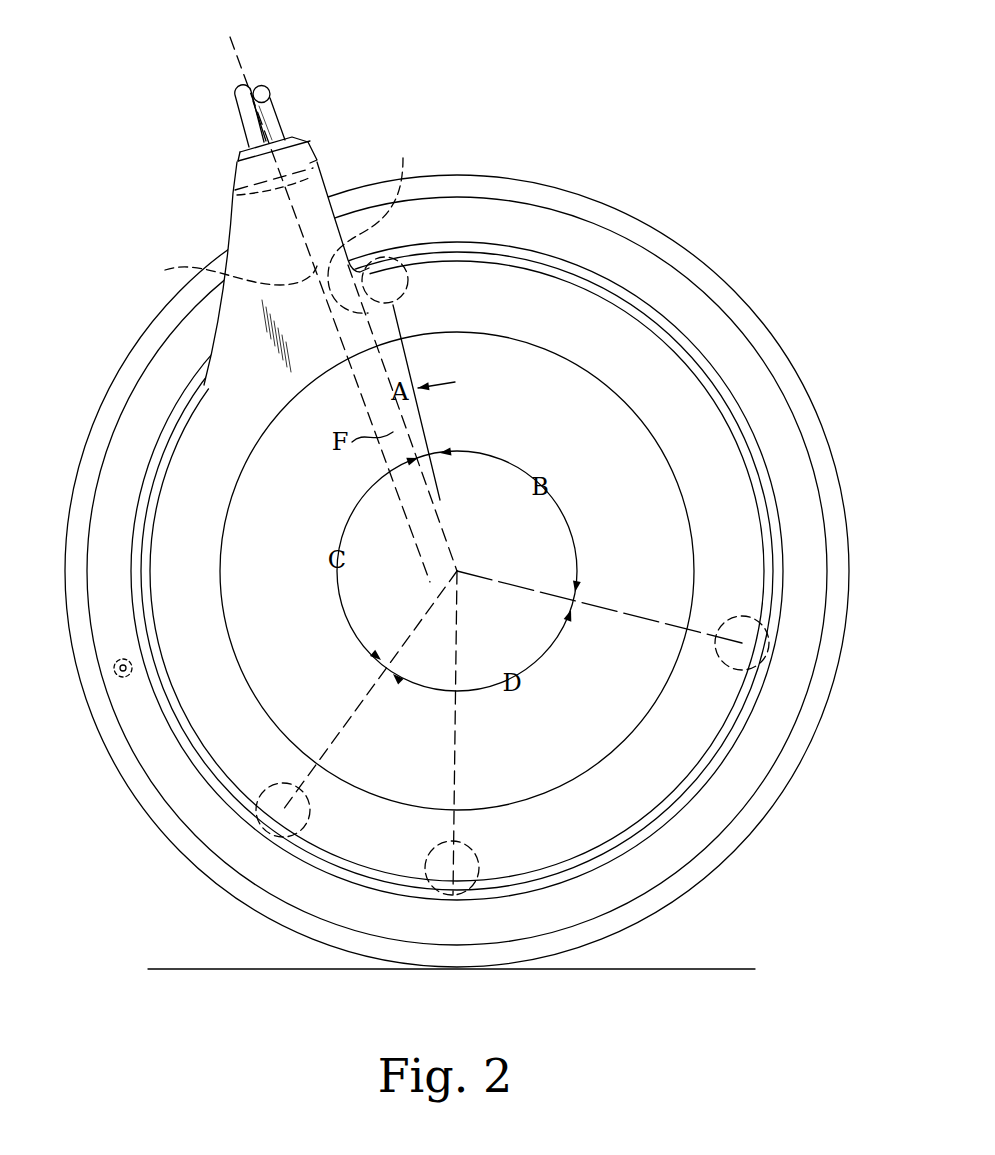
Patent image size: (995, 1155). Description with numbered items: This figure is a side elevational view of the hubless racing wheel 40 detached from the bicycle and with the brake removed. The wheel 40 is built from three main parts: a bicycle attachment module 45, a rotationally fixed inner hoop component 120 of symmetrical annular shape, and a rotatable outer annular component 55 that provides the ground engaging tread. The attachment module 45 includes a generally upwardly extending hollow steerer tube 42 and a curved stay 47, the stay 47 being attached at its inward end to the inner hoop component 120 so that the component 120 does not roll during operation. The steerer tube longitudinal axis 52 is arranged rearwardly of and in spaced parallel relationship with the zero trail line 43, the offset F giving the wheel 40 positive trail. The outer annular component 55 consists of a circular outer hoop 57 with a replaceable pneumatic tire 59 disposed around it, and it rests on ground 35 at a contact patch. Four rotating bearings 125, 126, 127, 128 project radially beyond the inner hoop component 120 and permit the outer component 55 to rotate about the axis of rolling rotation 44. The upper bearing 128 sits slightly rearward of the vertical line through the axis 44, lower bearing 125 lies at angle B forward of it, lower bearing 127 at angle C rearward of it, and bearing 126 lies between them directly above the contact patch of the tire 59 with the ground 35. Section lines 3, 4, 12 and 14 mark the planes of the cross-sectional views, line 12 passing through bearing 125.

The section line 3- 3 is at (195, 57).
The section line 4- 4 is at (95, 437).
The section line 12- 12 is at (680, 577).
The section line 14- 14 is at (52, 633).
The ground 35 is at (653, 970).
The wheel 40 is at (565, 122).
The steerer tube 42 is at (285, 106).
The zero trail line 43 is at (372, 221).
The axis of rolling rotation 44 is at (458, 571).
The bicycle attachment module 45 is at (215, 178).
The stay 47 is at (242, 226).
The steerer tube longitudinal axis 52 is at (225, 279).
The outer annular component 55 is at (580, 215).
The outer hoop 57 is at (485, 215).
The pneumatic tire 59 is at (655, 246).
The inner hoop component 120 is at (590, 372).
The lower bearing 125 is at (742, 650).
The bearing 126 is at (443, 867).
The lower bearing 127 is at (280, 806).
The upper bearing 128 is at (400, 288).